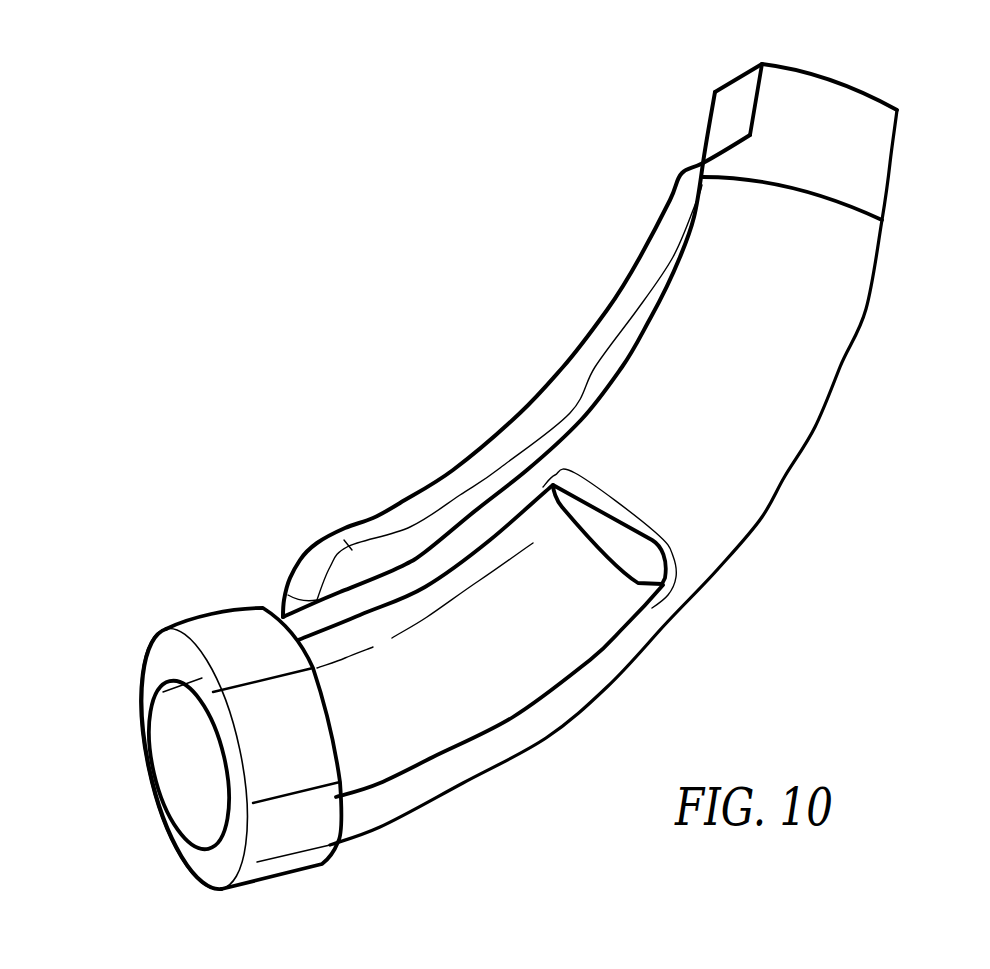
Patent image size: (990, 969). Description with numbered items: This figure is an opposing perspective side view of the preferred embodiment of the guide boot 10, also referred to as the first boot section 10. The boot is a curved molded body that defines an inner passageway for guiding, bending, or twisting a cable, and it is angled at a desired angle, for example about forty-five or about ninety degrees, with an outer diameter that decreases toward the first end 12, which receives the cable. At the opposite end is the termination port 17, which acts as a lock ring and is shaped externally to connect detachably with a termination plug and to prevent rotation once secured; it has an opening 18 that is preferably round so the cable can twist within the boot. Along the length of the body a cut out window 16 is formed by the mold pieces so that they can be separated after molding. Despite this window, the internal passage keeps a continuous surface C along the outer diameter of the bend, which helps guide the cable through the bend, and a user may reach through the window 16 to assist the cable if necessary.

The guide boot 10 is at (742, 502).
The first end 12 is at (878, 118).
The cut out window 16 is at (505, 678).
The termination port 17 is at (190, 848).
The opening 18 is at (192, 737).
The continuous surface C is at (633, 593).